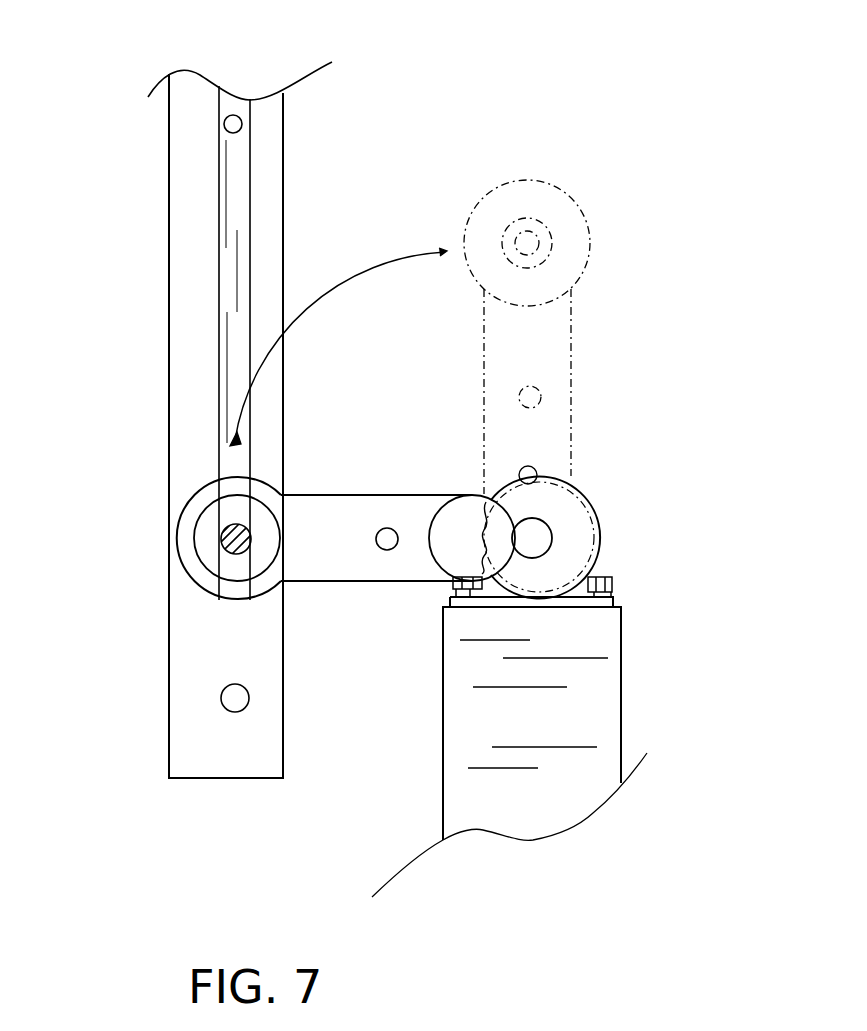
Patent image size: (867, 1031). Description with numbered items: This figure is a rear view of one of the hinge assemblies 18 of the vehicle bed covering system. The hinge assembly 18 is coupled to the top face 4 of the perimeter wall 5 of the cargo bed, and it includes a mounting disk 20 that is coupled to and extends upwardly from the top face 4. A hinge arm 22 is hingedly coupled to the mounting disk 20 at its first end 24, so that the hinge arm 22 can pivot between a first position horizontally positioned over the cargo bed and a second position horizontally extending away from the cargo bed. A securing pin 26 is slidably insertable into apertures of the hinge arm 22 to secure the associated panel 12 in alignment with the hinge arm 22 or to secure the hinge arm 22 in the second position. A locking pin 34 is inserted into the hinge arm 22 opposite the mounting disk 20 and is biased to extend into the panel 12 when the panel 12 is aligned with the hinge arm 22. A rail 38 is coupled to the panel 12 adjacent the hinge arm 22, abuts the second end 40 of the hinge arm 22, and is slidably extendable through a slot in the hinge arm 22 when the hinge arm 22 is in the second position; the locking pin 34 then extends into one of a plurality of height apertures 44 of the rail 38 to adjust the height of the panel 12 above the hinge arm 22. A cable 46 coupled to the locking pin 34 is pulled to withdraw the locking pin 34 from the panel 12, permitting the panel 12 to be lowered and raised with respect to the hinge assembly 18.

The top face 4 is at (575, 610).
The perimeter wall 5 is at (597, 713).
The panel 12 is at (190, 152).
The hinge assembly 18 is at (358, 583).
The mounting disk 20 is at (573, 498).
The hinge arm 22 is at (377, 495).
The first end 24 is at (593, 528).
The securing pin 26 is at (488, 560).
The locking pin 34 is at (205, 535).
The rail 38 is at (237, 172).
The second end 40 is at (185, 505).
The height aperture 44 is at (233, 115).
The cable 46 is at (235, 550).